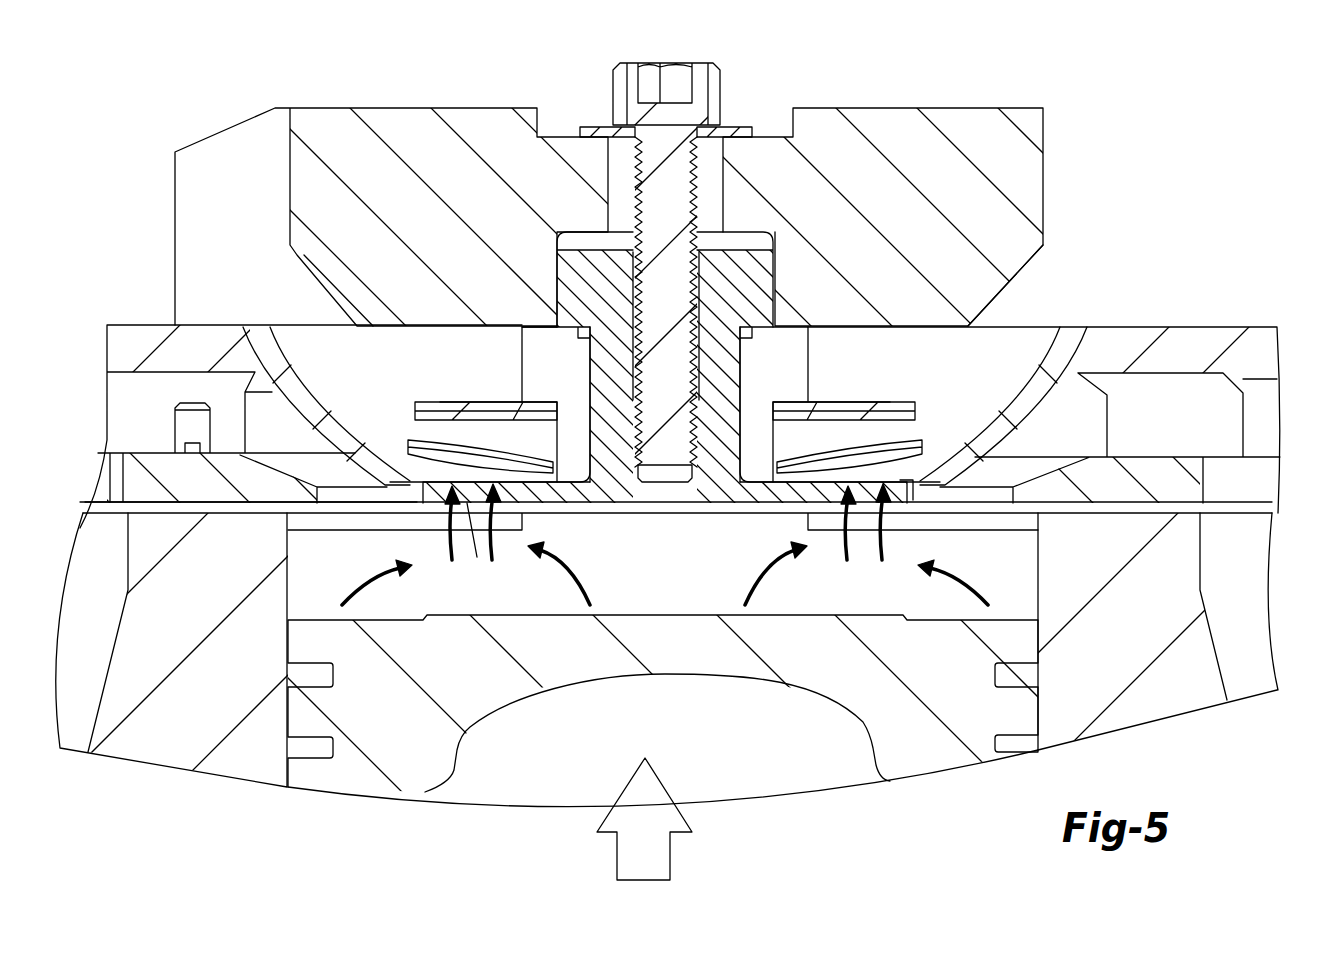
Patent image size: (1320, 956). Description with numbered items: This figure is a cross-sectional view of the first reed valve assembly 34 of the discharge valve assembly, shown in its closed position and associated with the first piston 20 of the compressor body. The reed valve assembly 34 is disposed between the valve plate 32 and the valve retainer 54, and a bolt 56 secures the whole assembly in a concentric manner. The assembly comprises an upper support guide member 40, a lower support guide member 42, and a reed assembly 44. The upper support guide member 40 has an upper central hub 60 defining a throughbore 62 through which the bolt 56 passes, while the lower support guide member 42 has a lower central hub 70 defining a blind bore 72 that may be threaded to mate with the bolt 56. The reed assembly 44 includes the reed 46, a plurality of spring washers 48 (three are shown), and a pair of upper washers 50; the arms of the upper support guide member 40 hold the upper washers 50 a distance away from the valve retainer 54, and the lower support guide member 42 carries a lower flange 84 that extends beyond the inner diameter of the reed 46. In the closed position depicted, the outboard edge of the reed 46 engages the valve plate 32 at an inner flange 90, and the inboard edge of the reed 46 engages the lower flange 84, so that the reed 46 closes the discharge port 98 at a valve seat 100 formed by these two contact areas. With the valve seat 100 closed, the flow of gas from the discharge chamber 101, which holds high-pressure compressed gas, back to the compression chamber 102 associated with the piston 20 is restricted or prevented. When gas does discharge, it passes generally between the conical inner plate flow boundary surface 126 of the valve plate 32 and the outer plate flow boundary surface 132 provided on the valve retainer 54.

The first piston 20 is at (873, 740).
The valve plate 32 is at (152, 322).
The first reed valve assembly 34 is at (1080, 222).
The upper support guide member 40 is at (752, 268).
The lower support guide member 42 is at (724, 482).
The reed assembly 44 is at (962, 327).
The reed 46 is at (432, 520).
The spring washers 48 is at (936, 444).
The upper washers 50 is at (838, 395).
The valve retainer 54 is at (898, 122).
The bolt 56 is at (712, 62).
The upper central hub 60 is at (600, 355).
The throughbore 62 is at (627, 273).
The lower central hub 70 is at (603, 418).
The blind bore 72 is at (672, 485).
The lower flange 84 is at (806, 495).
The inner flange 90 is at (410, 478).
The discharge port 98 is at (472, 560).
The valve seat 100 is at (518, 482).
The discharge chamber 101 is at (1198, 266).
The compression chamber 102 is at (1002, 586).
The inner plate flow boundary surface 126 is at (326, 374).
The outer plate flow boundary surface 132 is at (300, 281).